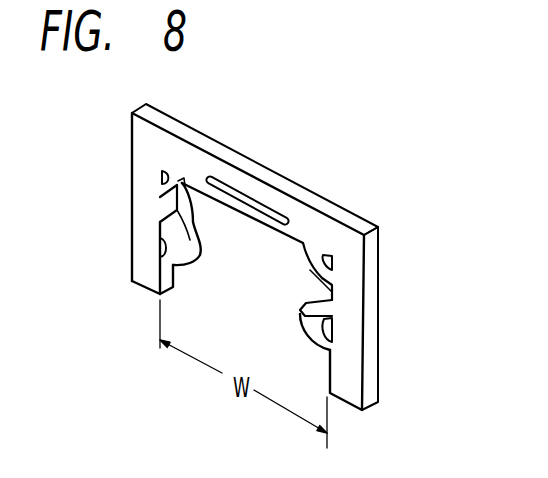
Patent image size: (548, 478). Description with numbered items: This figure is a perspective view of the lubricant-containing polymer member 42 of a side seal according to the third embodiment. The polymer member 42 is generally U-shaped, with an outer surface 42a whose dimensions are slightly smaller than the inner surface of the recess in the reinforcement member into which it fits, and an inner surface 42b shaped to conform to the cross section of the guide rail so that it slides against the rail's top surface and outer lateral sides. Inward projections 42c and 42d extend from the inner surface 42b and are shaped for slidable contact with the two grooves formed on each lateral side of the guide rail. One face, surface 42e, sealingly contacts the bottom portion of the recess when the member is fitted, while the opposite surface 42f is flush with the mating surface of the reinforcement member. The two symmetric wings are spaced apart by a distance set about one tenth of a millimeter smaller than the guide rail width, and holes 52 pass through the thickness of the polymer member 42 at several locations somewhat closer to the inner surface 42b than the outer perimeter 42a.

The lubricant-containing polymer member 42 is at (371, 200).
The outer surface 42a is at (297, 184).
The inner surface 42b is at (140, 286).
The inward projection 42c is at (158, 215).
The inward projection 42d is at (300, 320).
The surface 42e is at (138, 153).
The opposite surface 42f is at (193, 126).
The holes 52 is at (235, 193).